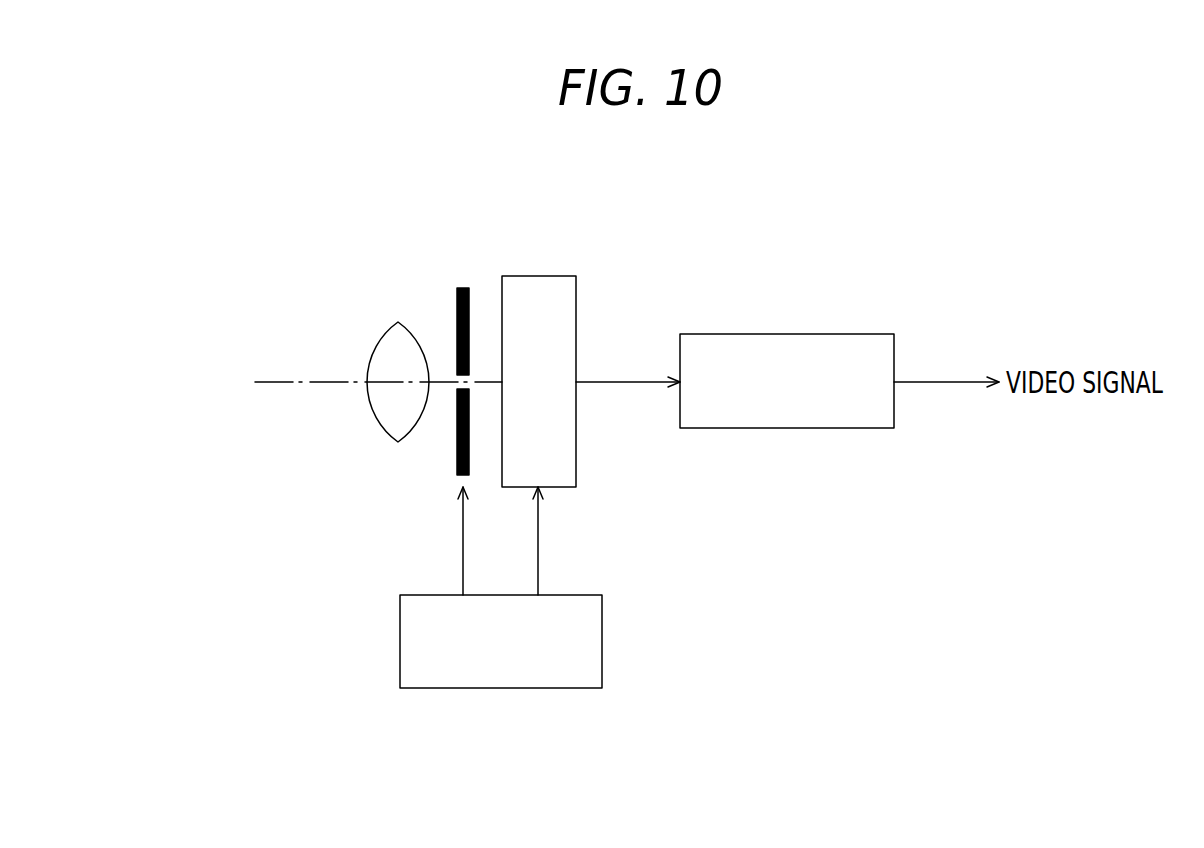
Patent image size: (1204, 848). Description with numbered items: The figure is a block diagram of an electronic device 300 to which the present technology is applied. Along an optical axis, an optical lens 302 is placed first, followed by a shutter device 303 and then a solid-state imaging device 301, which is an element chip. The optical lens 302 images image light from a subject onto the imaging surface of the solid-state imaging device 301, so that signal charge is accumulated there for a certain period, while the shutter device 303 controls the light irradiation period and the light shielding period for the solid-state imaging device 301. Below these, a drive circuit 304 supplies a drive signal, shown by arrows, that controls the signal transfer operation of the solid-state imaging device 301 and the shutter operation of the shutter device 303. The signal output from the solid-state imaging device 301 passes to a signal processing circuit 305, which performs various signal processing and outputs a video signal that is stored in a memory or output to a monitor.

The electronic device 300 is at (333, 223).
The solid-state imaging device 301 is at (537, 276).
The optical lens 302 is at (382, 332).
The shutter device 303 is at (463, 288).
The drive circuit 304 is at (602, 641).
The signal processing circuit 305 is at (787, 334).